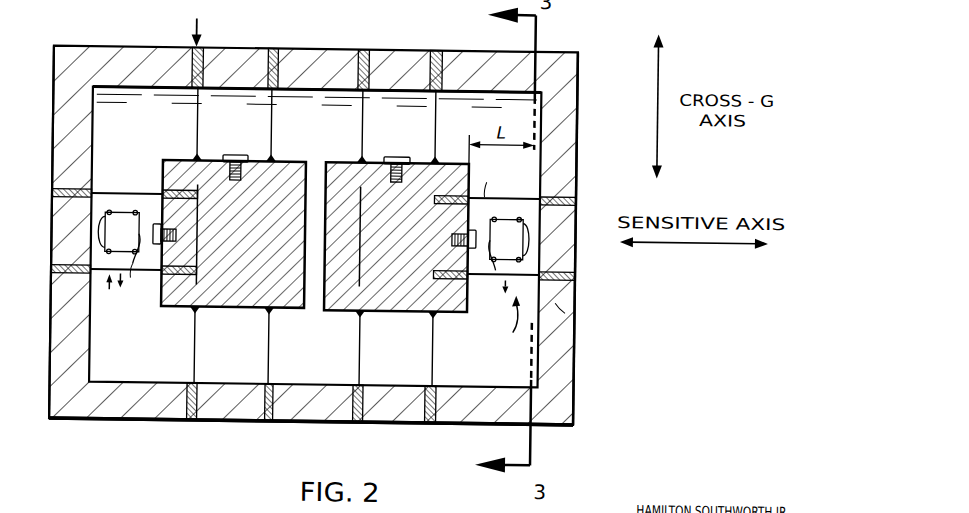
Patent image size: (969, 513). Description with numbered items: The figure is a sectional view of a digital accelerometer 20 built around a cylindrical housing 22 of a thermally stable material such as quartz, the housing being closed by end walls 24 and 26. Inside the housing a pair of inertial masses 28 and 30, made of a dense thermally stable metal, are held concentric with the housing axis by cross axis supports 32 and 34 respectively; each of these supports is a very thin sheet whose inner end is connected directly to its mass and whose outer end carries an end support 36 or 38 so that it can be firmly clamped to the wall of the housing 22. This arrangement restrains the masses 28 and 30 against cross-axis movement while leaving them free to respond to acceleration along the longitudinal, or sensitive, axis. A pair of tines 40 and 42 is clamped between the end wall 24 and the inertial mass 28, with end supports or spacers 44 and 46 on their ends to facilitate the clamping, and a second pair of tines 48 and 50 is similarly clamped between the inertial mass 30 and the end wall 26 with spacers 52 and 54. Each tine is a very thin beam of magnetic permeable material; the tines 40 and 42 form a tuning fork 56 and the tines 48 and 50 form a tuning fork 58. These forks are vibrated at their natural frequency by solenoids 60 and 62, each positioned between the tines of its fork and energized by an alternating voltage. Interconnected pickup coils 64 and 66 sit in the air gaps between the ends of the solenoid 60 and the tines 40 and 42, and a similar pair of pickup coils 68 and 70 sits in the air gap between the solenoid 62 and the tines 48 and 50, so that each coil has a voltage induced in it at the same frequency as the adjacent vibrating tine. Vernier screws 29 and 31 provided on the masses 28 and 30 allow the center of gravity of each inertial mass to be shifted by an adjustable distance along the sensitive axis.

The accelerometer 20 is at (195, 23).
The housing 22 is at (77, 47).
The end wall 24 is at (52, 138).
The end wall 26 is at (578, 130).
The inertial mass 28 is at (163, 306).
The vernier screw 29 is at (234, 156).
The inertial mass 30 is at (385, 311).
The vernier screw 31 is at (394, 156).
The cross axis supports 32 is at (195, 120).
The cross axis supports 34 is at (360, 114).
The end supports 36 is at (190, 62).
The end supports 38 is at (358, 60).
The tine 40 is at (121, 186).
The tine 42 is at (52, 312).
The end support or spacer 44 is at (51, 194).
The end support or spacer 46 is at (51, 284).
The tine 48 is at (506, 189).
The tine 50 is at (560, 302).
The spacer 52 is at (576, 192).
The spacer 54 is at (552, 286).
The tuning fork 56 is at (104, 292).
The tuning fork 58 is at (524, 305).
The solenoid 60 is at (132, 272).
The solenoid 62 is at (494, 272).
The pickup coil 64 is at (134, 202).
The pickup coil 66 is at (112, 288).
The pickup coil 68 is at (484, 195).
The pickup coil 70 is at (502, 306).